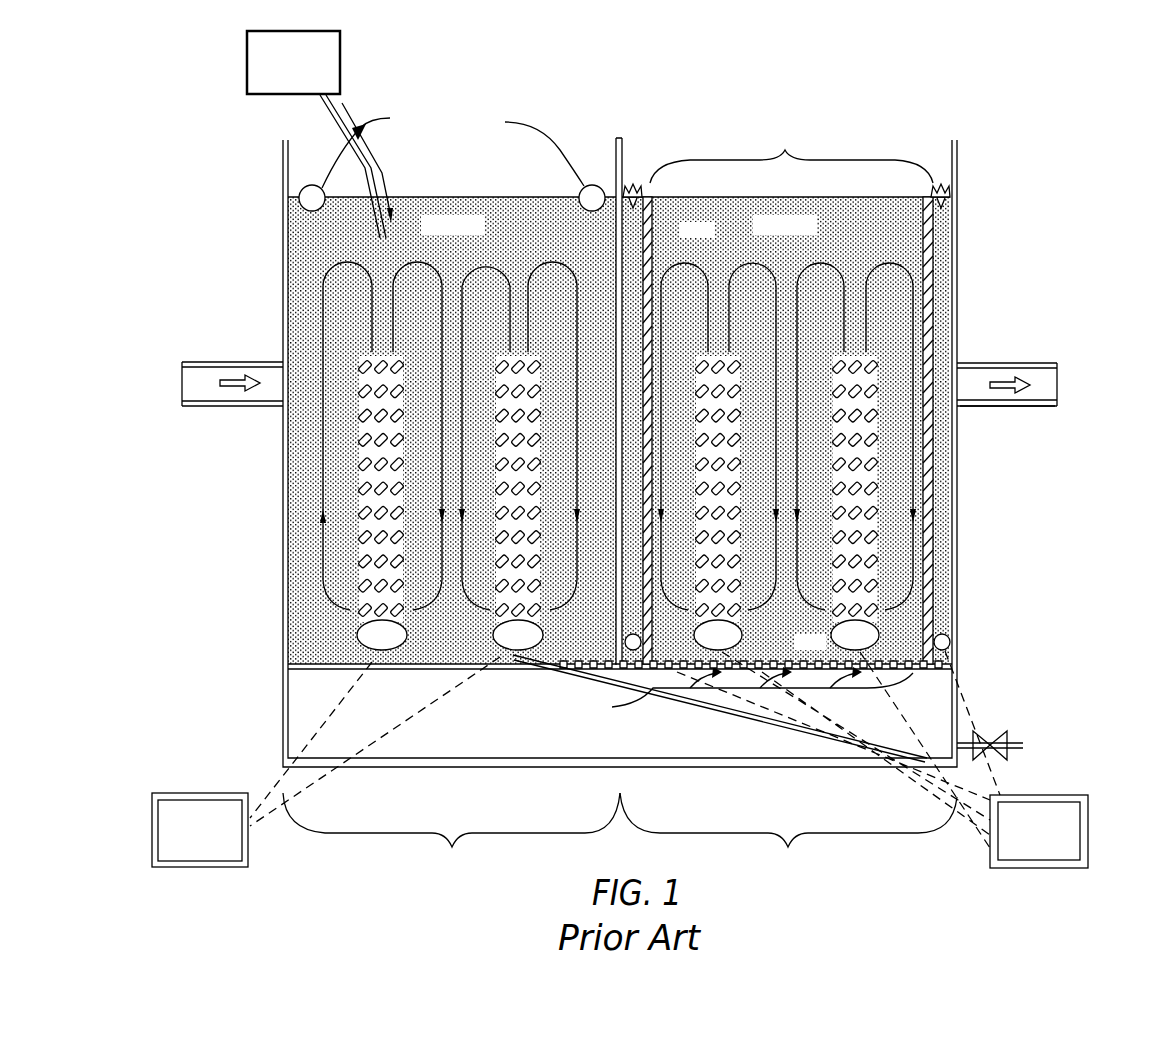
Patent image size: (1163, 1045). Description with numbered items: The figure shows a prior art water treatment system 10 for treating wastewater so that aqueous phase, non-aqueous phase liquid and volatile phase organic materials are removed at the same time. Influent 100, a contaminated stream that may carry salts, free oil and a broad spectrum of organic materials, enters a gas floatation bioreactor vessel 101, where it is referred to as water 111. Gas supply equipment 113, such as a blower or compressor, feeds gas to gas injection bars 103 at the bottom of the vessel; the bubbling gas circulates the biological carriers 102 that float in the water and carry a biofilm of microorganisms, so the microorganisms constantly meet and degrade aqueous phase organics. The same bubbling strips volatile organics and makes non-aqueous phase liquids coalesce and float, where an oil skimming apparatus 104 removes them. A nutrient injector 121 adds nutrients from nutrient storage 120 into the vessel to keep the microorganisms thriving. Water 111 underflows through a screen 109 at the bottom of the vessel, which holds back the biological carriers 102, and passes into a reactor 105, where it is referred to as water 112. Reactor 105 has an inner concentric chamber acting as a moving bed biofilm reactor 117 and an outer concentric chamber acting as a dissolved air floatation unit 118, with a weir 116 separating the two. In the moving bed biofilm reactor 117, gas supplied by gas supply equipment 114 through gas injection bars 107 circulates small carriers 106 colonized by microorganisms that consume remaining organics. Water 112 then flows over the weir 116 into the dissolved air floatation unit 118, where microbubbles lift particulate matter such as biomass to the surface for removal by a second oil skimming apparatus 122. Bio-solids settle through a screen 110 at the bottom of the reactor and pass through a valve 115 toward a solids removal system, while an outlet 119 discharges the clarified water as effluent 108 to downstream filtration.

The water treatment system 10 is at (212, 92).
The influent 100 is at (214, 375).
The gas floatation bioreactor vessel 101 is at (451, 546).
The biological carriers 102 is at (502, 440).
The gas injection bars 103 is at (362, 628).
The oil skimming apparatus 104 is at (455, 97).
The reactor 105 is at (788, 546).
The carriers 106 is at (868, 370).
The gas injection bars 107 is at (626, 638).
The effluent 108 is at (1037, 372).
The screen 109 is at (594, 669).
The screen 110 is at (913, 673).
The water 111 is at (547, 227).
The water 112 is at (850, 223).
The gas supply equipment 113 is at (213, 843).
The gas supply equipment 114 is at (1053, 843).
The valve 115 is at (996, 758).
The weir 116 is at (652, 226).
The moving bed biofilm reactor 117 is at (791, 157).
The dissolved air floatation unit 118 is at (631, 186).
The outlet 119 is at (1036, 406).
The nutrient storage 120 is at (308, 88).
The nutrient injector 121 is at (330, 122).
The oil skimming apparatus 122 is at (618, 186).